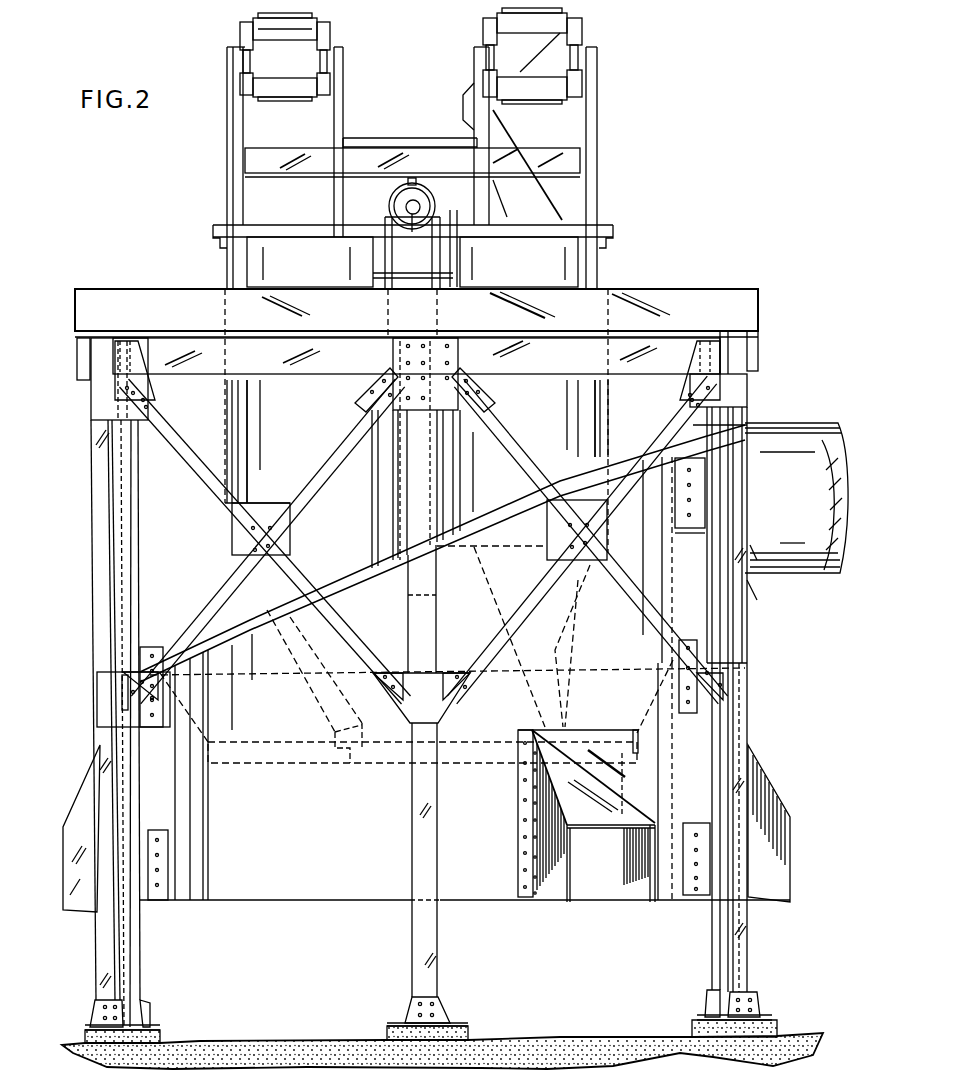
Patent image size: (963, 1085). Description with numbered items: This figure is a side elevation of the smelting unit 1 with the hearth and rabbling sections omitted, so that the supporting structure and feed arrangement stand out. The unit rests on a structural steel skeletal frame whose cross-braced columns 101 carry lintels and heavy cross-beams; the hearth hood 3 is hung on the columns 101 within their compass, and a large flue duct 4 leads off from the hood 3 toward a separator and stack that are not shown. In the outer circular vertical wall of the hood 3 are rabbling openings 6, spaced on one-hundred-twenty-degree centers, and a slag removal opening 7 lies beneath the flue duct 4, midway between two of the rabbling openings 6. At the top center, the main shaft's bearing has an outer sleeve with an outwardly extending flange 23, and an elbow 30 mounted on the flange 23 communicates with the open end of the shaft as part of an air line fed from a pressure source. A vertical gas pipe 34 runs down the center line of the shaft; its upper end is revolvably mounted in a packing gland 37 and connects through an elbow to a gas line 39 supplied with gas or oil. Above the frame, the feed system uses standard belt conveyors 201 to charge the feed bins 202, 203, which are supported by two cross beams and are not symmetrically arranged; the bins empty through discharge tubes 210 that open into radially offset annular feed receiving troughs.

The smelting unit 1 is at (88, 540).
The hearth hood 3 is at (340, 600).
The flue duct 4 is at (790, 426).
The rabbling openings 6 is at (90, 912).
The slag removal opening 7 is at (790, 855).
The flange 23 is at (417, 268).
The elbow 30 is at (433, 232).
The vertical gas pipe 34 is at (412, 253).
The packing gland 37 is at (390, 198).
The gas line 39 is at (410, 178).
The columns 101 is at (142, 980).
The belt conveyors 201 is at (258, 10).
The feed bin 202 is at (310, 262).
The feed bin 203 is at (519, 262).
The discharge tubes 210 is at (350, 750).